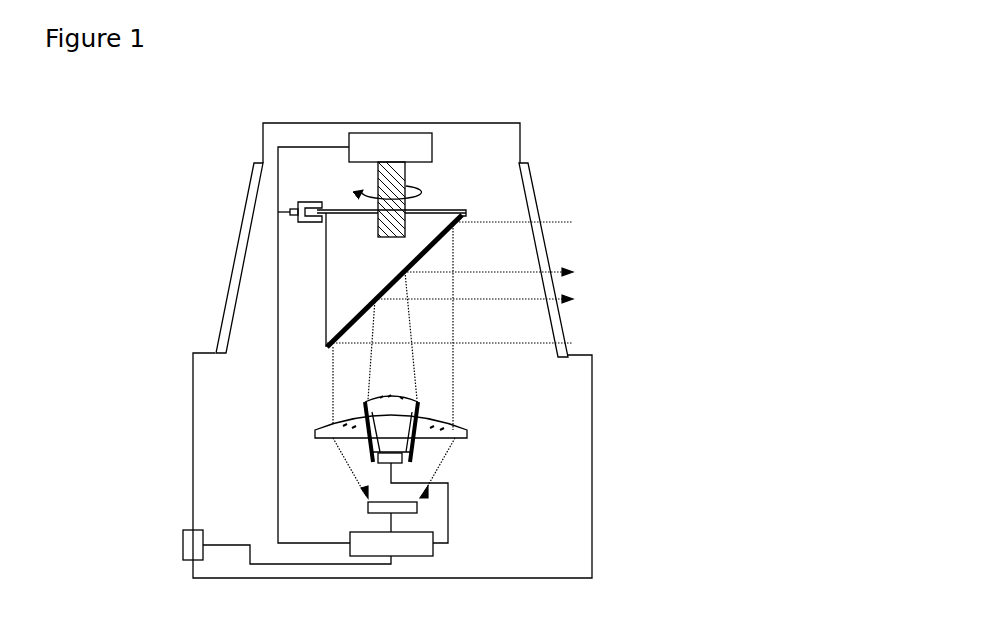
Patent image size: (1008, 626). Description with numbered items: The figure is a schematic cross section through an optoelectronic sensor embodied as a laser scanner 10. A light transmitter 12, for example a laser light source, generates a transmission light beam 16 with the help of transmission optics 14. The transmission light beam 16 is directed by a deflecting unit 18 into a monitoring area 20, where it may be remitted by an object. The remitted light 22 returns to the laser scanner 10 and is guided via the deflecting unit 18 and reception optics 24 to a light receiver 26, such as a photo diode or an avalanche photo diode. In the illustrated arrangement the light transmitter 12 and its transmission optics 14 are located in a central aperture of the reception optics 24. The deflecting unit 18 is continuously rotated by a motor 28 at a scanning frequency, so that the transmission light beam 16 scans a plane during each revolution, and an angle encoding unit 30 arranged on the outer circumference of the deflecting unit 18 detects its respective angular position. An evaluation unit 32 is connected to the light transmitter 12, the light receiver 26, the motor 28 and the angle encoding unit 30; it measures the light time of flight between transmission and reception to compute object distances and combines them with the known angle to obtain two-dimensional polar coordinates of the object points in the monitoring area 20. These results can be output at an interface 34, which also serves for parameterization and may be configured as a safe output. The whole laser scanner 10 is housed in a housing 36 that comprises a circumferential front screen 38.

The laser scanner 10 is at (607, 90).
The light transmitter 12 is at (407, 464).
The transmission optics 14 is at (405, 402).
The transmission light beam 16 is at (510, 272).
The deflecting unit 18 is at (381, 289).
The monitoring area 20 is at (746, 220).
The remitted light 22 is at (560, 222).
The reception optics 24 is at (337, 432).
The light receiver 26 is at (367, 511).
The motor 28 is at (362, 153).
The angle encoding unit 30 is at (303, 223).
The evaluation unit 32 is at (402, 550).
The interface 34 is at (183, 546).
The housing 36 is at (592, 562).
The front screen 38 is at (228, 311).